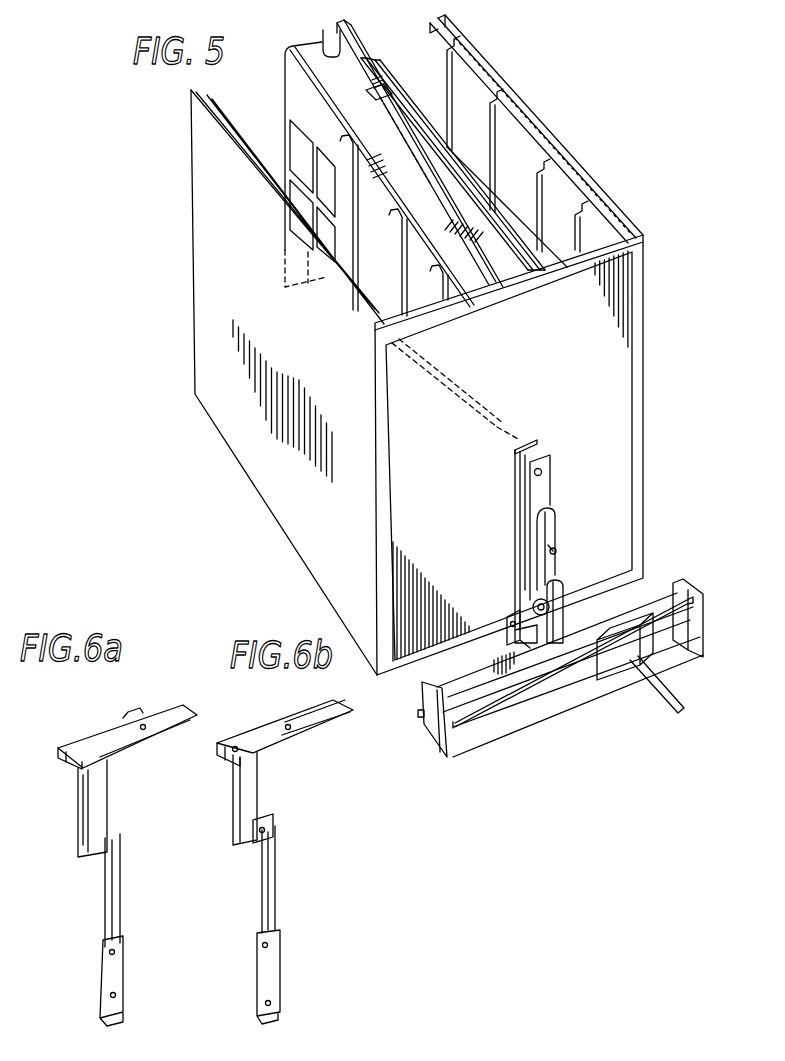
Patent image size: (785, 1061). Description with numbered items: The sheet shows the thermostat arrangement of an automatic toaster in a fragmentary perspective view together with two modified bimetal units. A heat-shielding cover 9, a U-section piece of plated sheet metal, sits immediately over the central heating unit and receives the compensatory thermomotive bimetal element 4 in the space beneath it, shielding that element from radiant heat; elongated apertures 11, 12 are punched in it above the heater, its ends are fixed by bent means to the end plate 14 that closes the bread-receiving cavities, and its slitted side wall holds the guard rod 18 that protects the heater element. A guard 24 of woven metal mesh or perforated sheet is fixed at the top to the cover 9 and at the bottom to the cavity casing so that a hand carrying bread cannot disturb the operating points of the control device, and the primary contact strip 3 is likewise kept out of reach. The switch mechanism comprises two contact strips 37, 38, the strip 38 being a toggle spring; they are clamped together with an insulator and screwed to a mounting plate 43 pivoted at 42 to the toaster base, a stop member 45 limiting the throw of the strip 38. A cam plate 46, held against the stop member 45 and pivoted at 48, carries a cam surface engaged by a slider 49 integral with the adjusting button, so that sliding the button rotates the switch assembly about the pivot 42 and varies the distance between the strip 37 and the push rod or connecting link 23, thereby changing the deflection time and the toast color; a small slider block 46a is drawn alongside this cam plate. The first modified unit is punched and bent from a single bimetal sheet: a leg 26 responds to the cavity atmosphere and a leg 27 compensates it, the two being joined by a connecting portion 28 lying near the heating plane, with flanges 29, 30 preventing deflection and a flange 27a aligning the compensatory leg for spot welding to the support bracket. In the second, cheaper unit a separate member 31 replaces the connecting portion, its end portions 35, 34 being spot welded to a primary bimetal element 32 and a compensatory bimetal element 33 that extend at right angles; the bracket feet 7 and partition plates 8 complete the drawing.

In FIG. 5, the primary contact strip 3 is at (310, 152).
In FIG. 5, the compensatory thermomotive bimetal element 4 is at (372, 93).
In FIG. 6a, the bracket foot 7 is at (115, 982).
In FIG. 6b, the bracket foot 7 is at (270, 973).
In FIG. 5, the hanging partition plates 8 is at (483, 233).
In FIG. 5, the heat-shielding cover 9 is at (420, 120).
In FIG. 5, the elongated aperture 11 is at (403, 157).
In FIG. 5, the elongated aperture 12 is at (350, 44).
In FIG. 5, the end plate 14 is at (613, 340).
In FIG. 5, the guard rod 18 is at (548, 197).
In FIG. 5, the push rod or connecting link 23 is at (497, 427).
In FIG. 5, the guard 24 is at (288, 100).
In FIG. 6a, the leg 26 is at (118, 898).
In FIG. 6a, the leg 27 is at (128, 742).
In FIG. 6a, the flange 27a is at (133, 714).
In FIG. 6a, the connecting portion 28 is at (103, 790).
In FIG. 6a, the flange 29 is at (85, 808).
In FIG. 6a, the flange 30 is at (70, 742).
In FIG. 6b, the separate member 31 is at (250, 788).
In FIG. 6b, the primary bimetal element 32 is at (268, 889).
In FIG. 6b, the compensatory bimetal element 33 is at (282, 720).
In FIG. 6b, the end portion 34 is at (236, 742).
In FIG. 6b, the end portion 35 is at (268, 828).
In FIG. 5, the contact strip 37 is at (540, 458).
In FIG. 5, the contact strip 38 is at (545, 472).
In FIG. 5, the pivot 42 is at (512, 625).
In FIG. 5, the mounting plate 43 is at (520, 440).
In FIG. 5, the stop member 45 is at (556, 530).
In FIG. 5, the cam plate 46 is at (510, 706).
In FIG. 5, the slider block 46a is at (566, 585).
In FIG. 5, the pivot 48 is at (668, 620).
In FIG. 5, the slider 49 is at (626, 672).